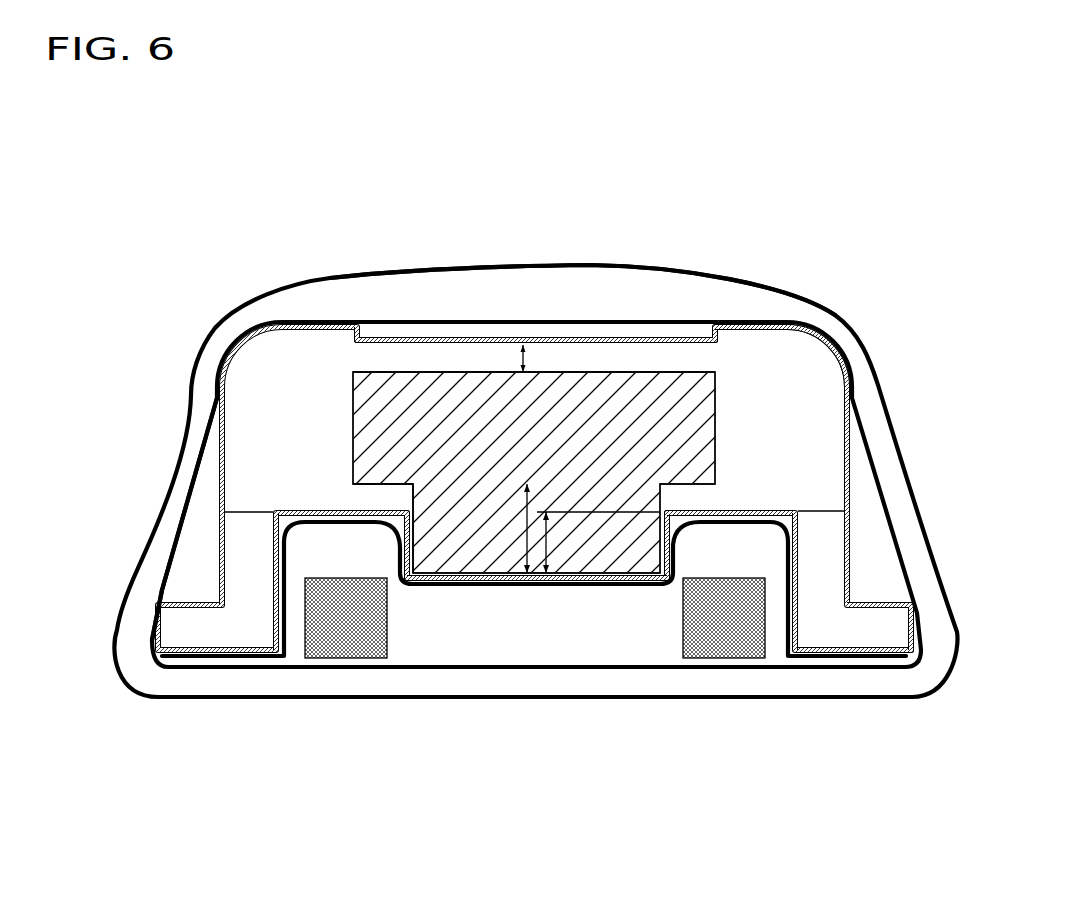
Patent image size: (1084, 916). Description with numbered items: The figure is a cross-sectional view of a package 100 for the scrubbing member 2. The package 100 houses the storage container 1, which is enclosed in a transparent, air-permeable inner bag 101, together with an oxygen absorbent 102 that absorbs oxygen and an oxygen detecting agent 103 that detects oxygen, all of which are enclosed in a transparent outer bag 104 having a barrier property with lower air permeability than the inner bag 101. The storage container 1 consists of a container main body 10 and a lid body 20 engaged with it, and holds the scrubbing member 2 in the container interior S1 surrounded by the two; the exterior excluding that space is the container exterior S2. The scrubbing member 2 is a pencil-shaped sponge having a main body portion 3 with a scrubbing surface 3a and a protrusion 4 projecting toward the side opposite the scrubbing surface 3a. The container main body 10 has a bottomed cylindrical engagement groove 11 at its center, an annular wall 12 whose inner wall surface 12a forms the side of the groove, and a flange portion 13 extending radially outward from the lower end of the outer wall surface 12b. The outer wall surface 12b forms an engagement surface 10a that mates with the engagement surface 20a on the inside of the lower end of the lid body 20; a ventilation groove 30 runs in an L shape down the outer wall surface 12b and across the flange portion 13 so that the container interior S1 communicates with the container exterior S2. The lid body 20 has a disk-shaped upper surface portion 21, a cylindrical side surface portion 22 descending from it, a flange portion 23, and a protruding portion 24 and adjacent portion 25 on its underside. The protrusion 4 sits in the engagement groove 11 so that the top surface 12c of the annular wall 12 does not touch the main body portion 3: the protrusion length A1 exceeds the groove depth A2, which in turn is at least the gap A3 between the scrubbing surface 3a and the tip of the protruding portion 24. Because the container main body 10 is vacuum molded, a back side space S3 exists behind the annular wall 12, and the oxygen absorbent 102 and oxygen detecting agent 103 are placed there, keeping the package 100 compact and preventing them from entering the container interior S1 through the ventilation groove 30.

The package 100 is at (185, 245).
The storage container 1 is at (215, 510).
The inner bag 101 is at (178, 548).
The scrubbing member 2 is at (340, 383).
The main body portion 3 is at (352, 432).
The scrubbing surface 3a is at (500, 371).
The protrusion 4 is at (400, 498).
The container main body 10 is at (767, 505).
The engagement surface 10a is at (853, 707).
The engagement groove 11 is at (613, 560).
The annular wall 12 is at (736, 505).
The inner wall surface 12a is at (662, 548).
The outer wall surface 12b is at (847, 560).
The top surface 12c is at (690, 511).
The flange portion 13 is at (892, 598).
The lid body 20 is at (754, 316).
The engagement surface 20a is at (848, 556).
The upper surface portion 21 is at (733, 325).
The side surface portion 22 is at (855, 452).
The flange portion 23 is at (878, 594).
The protruding portion 24 is at (450, 350).
The recess bottom surface 25 is at (456, 338).
The ventilation groove 30 is at (272, 565).
The oxygen absorbent 102 is at (303, 632).
The oxygen detecting agent 103 is at (766, 632).
The outer bag 104 is at (590, 266).
The length of the protrusion A1 is at (527, 541).
The depth of the engagement groove A2 is at (547, 543).
The gap between the lid body and the scrubbing surface A3 is at (526, 357).
The container interior S1 is at (275, 392).
The container exterior S2 is at (204, 411).
The back side space S3 is at (430, 626).